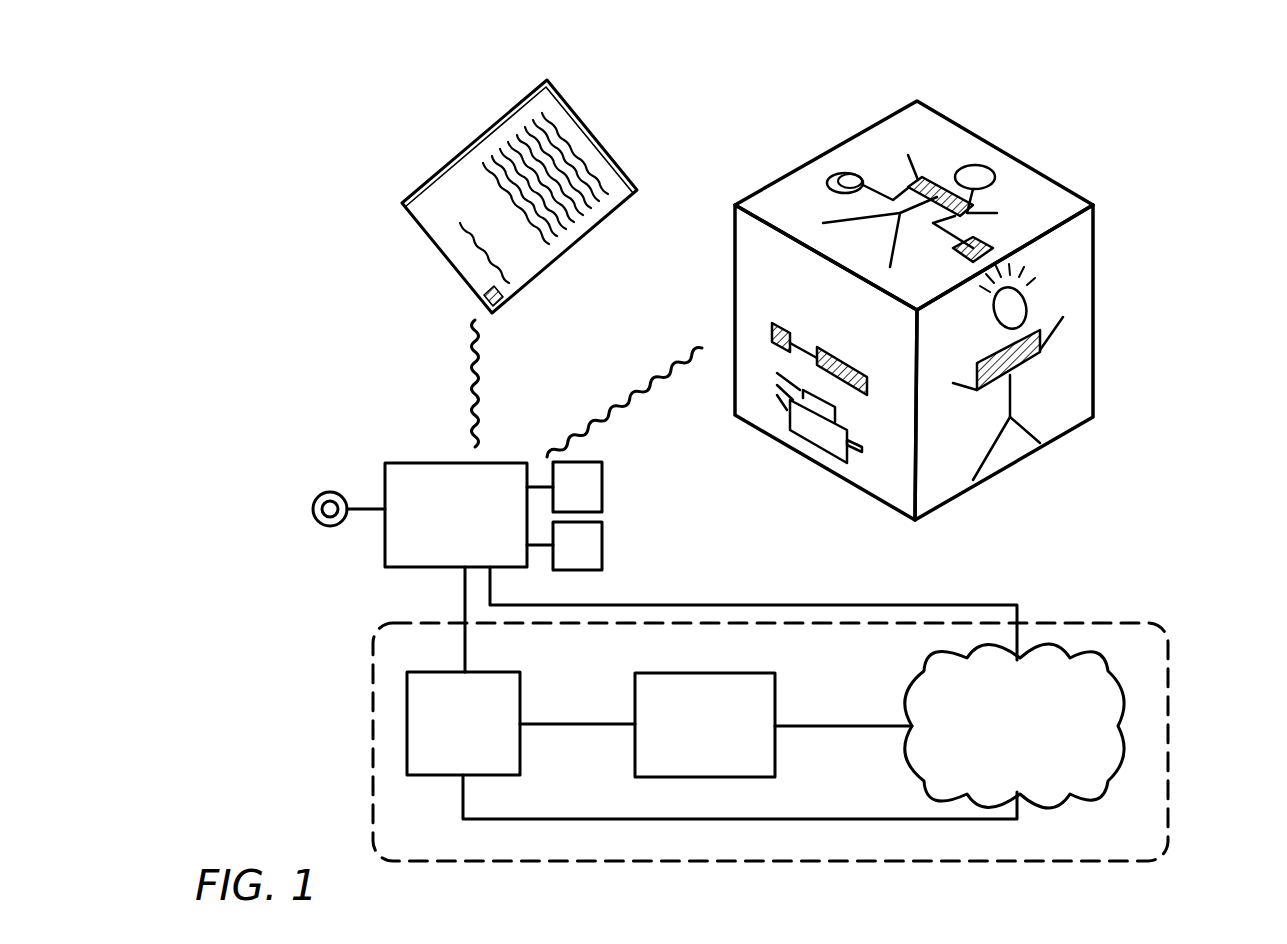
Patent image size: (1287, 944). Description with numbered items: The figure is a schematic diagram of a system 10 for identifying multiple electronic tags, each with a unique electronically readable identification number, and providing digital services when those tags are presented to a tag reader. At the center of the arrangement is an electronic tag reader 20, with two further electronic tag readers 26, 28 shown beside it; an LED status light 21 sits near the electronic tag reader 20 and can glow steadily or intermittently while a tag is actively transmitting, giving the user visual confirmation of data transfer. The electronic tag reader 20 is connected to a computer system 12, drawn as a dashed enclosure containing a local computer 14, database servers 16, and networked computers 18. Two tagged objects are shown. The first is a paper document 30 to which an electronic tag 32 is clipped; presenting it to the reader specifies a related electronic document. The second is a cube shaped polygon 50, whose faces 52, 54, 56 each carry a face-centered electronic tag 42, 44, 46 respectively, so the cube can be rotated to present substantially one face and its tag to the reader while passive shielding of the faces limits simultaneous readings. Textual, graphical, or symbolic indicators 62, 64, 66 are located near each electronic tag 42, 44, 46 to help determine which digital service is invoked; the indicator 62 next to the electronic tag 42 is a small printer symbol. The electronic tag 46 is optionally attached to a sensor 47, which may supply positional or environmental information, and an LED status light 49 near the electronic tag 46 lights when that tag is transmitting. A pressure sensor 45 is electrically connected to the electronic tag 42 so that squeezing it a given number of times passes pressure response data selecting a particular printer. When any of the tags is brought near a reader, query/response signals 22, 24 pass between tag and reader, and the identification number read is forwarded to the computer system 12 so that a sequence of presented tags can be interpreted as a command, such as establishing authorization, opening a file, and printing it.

The system 10 is at (1178, 150).
The computer system 12 is at (372, 730).
The local computer 14 is at (445, 717).
The database servers 16 is at (687, 718).
The networked computers 18 is at (999, 711).
The electronic tag reader 20 is at (437, 503).
The LED status light 21 is at (313, 502).
The query/response signal 22 is at (470, 378).
The query/response signal 24 is at (630, 393).
The electronic tag reader 26 is at (592, 502).
The electronic tag reader 28 is at (592, 561).
The paper document 30 is at (630, 105).
The electronic tag 32 is at (483, 302).
The electronic tag 42 is at (867, 387).
The electronic tag 44 is at (1040, 367).
The pressure sensor 45 is at (775, 327).
The electronic tag 46 is at (932, 178).
The sensor 47 is at (995, 245).
The LED status light 49 is at (838, 177).
The cube shaped polygon 50 is at (1098, 287).
The face 52 is at (745, 400).
The face 54 is at (1075, 250).
The face 56 is at (792, 193).
The indicator 62 is at (830, 450).
The indicator 64 is at (1022, 428).
The indicator 66 is at (997, 210).